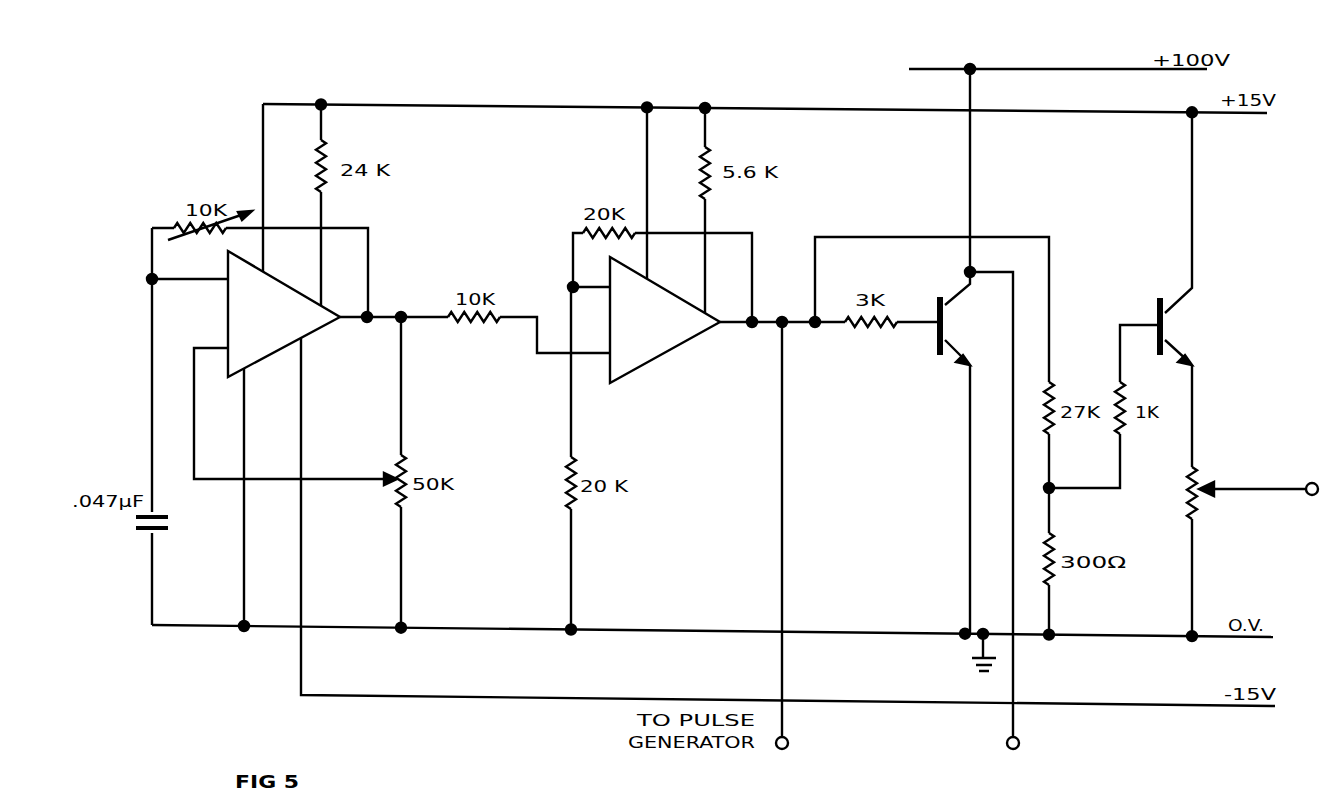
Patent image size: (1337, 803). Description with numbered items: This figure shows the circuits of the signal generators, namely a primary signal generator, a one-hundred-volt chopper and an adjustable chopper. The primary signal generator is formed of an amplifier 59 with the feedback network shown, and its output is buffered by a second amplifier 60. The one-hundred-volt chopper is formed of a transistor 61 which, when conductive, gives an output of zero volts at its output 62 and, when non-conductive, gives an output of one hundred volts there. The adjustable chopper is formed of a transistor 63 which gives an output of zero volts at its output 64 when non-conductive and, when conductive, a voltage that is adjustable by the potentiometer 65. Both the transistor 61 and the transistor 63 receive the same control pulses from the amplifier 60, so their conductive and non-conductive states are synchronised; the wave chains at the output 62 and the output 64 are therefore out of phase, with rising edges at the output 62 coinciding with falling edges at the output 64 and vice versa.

The amplifier 59 is at (284, 314).
The amplifier 60 is at (665, 320).
The transistor 61 is at (933, 300).
The output 62 is at (1005, 749).
The transistor 63 is at (1155, 300).
The output 64 is at (1311, 497).
The potentiometer 65 is at (1196, 470).